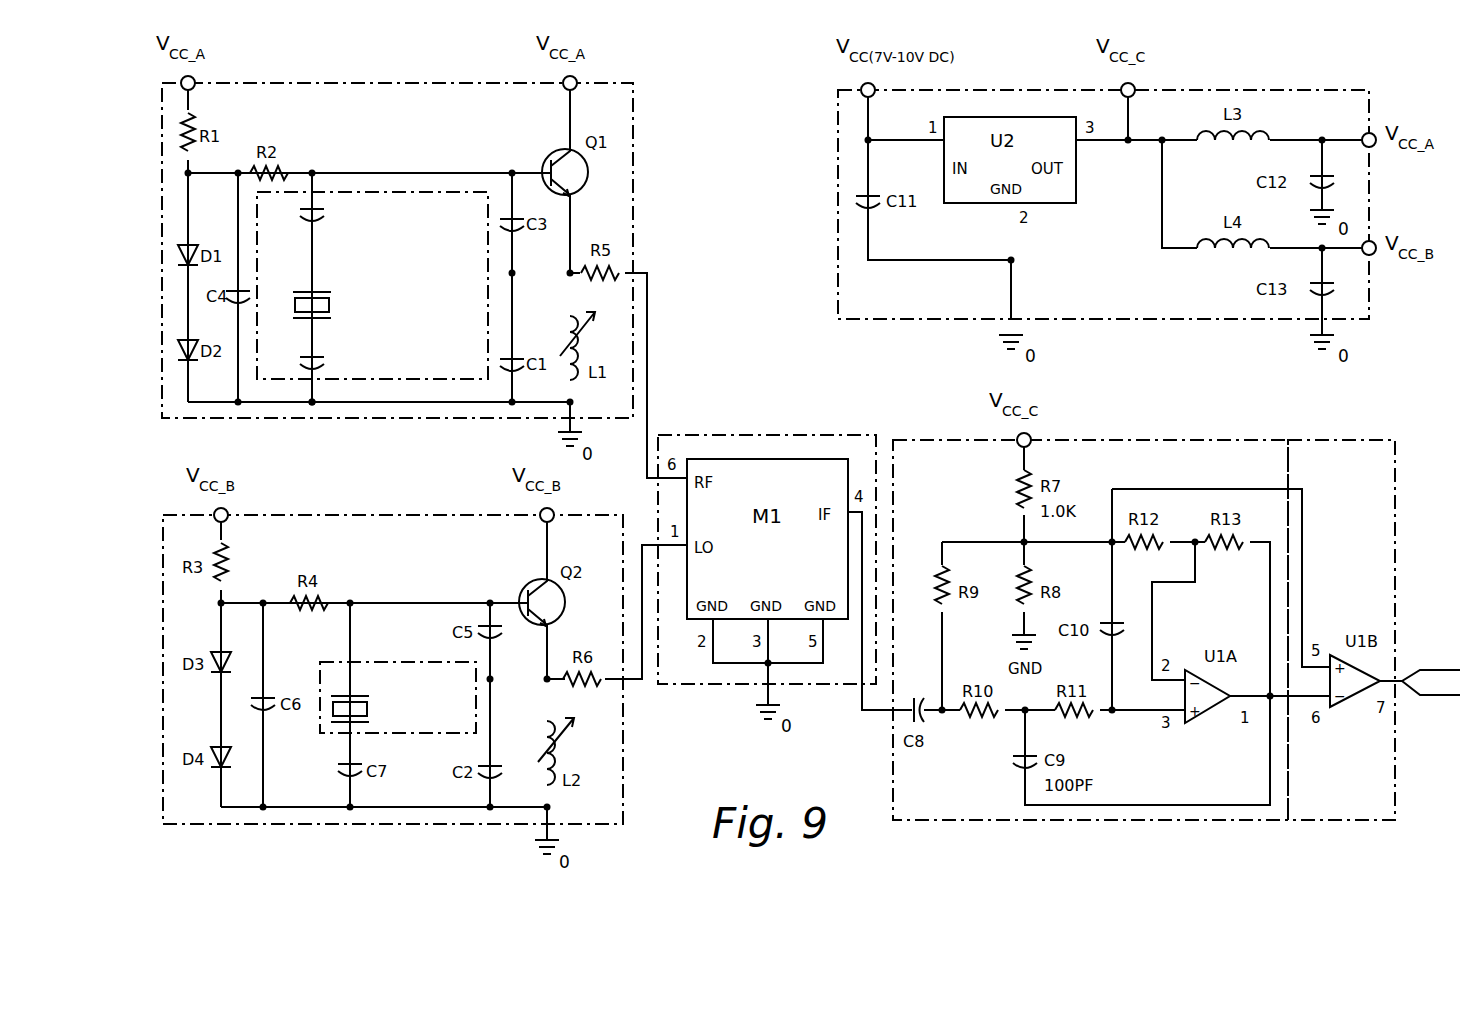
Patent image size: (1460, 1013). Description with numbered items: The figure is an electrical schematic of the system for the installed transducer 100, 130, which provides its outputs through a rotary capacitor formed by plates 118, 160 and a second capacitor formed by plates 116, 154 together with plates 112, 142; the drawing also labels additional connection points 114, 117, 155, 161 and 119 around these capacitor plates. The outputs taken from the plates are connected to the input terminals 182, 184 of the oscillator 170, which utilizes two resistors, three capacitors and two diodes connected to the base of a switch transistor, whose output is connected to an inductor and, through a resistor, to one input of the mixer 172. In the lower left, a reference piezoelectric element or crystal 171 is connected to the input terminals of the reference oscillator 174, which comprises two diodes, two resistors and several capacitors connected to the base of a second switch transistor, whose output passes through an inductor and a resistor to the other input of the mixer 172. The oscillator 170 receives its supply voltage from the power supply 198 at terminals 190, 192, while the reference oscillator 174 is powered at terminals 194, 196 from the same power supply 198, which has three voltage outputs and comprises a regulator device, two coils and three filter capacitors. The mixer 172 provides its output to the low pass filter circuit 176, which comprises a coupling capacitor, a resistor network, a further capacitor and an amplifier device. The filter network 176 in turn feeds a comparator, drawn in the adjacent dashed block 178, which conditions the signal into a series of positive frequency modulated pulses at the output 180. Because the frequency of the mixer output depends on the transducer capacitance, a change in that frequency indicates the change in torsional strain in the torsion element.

The transducer 100 is at (502, 244).
The transducer 130 is at (490, 305).
The plate of capacitor CC2 112 is at (363, 322).
The plate of capacitor CC2 142 is at (316, 353).
The crystal upper lead 114 is at (386, 240).
The plate of capacitor CC2 116 is at (316, 226).
The plate of capacitor CC2 154 is at (312, 372).
The bottom connection lead 117 is at (390, 422).
The ground return lead 155 is at (315, 390).
The plate of rotary capacitor CC1 160 is at (399, 171).
The plate of rotary capacitor CC1 118 is at (315, 200).
The capacitor lead 161 is at (372, 165).
The capacitor connection 119 is at (318, 186).
The oscillator 170 is at (400, 82).
The reference piezoelectric element or crystal 171 is at (413, 661).
The mixer 172 is at (735, 435).
The reference oscillator 174 is at (400, 514).
The low pass filter circuit 176 is at (1130, 822).
The output buffer circuit 178 is at (1330, 440).
The output 180 is at (1454, 701).
The input terminal of oscillator 182 is at (312, 170).
The input terminal of oscillator 184 is at (312, 405).
The supply terminal 190 is at (195, 88).
The supply terminal 192 is at (565, 88).
The supply terminal 194 is at (228, 520).
The supply terminal 196 is at (542, 520).
The power supply 198 is at (1272, 90).